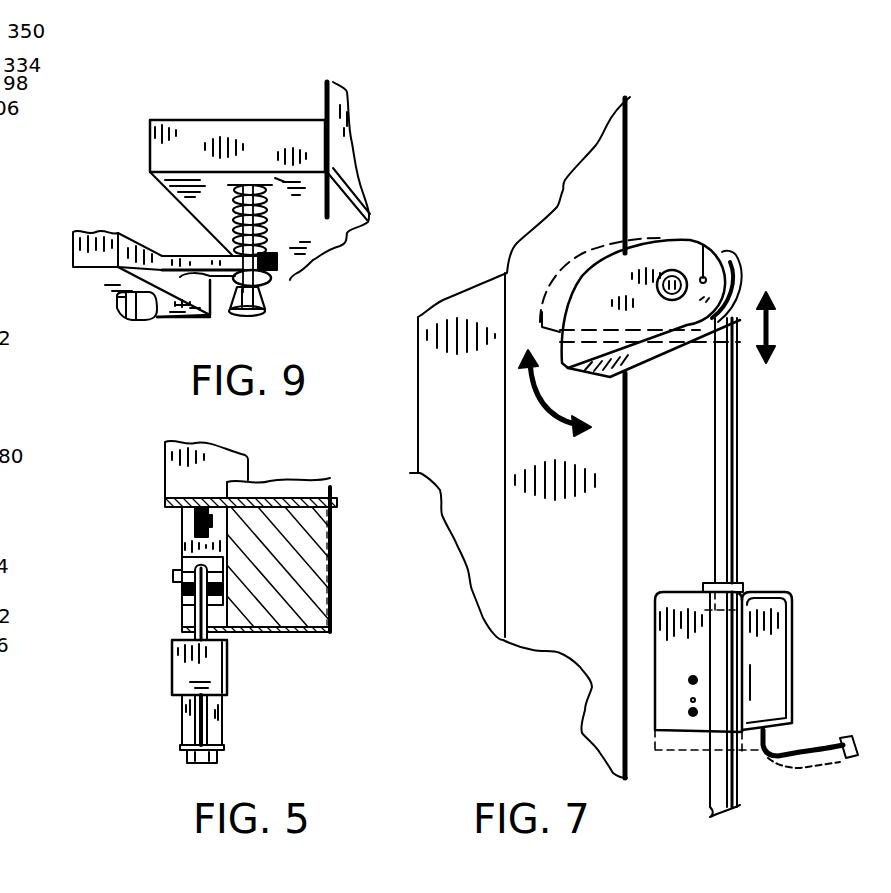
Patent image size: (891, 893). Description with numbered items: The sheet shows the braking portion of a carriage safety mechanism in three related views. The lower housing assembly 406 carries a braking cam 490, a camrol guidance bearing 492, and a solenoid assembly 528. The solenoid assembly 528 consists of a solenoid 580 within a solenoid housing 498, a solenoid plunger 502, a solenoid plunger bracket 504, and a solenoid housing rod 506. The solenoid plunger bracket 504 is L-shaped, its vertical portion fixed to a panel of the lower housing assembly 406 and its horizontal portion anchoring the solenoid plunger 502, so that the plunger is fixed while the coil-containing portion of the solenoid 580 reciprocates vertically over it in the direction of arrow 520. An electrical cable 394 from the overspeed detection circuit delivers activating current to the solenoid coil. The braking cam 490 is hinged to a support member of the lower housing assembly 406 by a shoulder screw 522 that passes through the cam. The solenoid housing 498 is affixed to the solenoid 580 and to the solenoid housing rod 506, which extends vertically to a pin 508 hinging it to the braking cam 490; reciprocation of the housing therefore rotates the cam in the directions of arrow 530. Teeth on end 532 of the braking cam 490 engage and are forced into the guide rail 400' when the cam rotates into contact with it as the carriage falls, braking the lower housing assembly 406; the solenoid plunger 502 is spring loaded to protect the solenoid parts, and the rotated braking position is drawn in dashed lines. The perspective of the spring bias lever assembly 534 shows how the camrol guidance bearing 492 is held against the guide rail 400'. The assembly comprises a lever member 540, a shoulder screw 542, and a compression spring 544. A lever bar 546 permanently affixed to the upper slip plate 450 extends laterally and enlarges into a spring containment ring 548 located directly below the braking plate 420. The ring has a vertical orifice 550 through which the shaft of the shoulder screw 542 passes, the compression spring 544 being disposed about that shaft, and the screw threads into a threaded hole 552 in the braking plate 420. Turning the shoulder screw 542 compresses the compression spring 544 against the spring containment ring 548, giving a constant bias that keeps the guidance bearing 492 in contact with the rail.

In FIG. 9, the lever member 540 is at (228, 185).
In FIG. 9, the threaded hole 552 is at (238, 257).
In FIG. 9, the compression spring 544 is at (233, 258).
In FIG. 9, the spring bias lever assembly 534 is at (202, 245).
In FIG. 9, the lever bar 546 is at (167, 258).
In FIG. 9, the upper slip plate 450 is at (78, 254).
In FIG. 9, the braking plate 420 is at (347, 236).
In FIG. 9, the spring containment ring 548 is at (270, 277).
In FIG. 9, the shoulder screw 542 is at (268, 292).
In FIG. 9, the orifice 550 is at (236, 278).
In FIG. 5, the lower housing assembly 406 is at (224, 456).
In FIG. 5, the camrol guidance bearing 492 is at (195, 515).
In FIG. 5, the solenoid assembly 528 is at (320, 515).
In FIG. 7, the solenoid assembly 528 is at (765, 662).
In FIG. 5, the shoulder screw 522 is at (200, 565).
In FIG. 7, the shoulder screw 522 is at (668, 268).
In FIG. 5, the solenoid housing rod 506 is at (203, 607).
In FIG. 7, the solenoid housing rod 506 is at (720, 397).
In FIG. 5, the braking cam 490 is at (213, 563).
In FIG. 7, the braking cam 490 is at (680, 245).
In FIG. 5, the solenoid housing 498 is at (230, 655).
In FIG. 7, the solenoid housing 498 is at (772, 592).
In FIG. 5, the solenoid 580 is at (203, 680).
In FIG. 7, the solenoid 580 is at (770, 688).
In FIG. 5, the solenoid plunger 502 is at (190, 727).
In FIG. 7, the solenoid plunger 502 is at (713, 755).
In FIG. 5, the solenoid plunger bracket 504 is at (222, 720).
In FIG. 7, the guide rail 400' is at (573, 437).
In FIG. 7, the pin 508 is at (703, 245).
In FIG. 7, the arrow 520 is at (770, 327).
In FIG. 7, the arrow 530 is at (550, 417).
In FIG. 7, the toothed end 532 is at (593, 377).
In FIG. 7, the electrical cable 394 is at (845, 755).